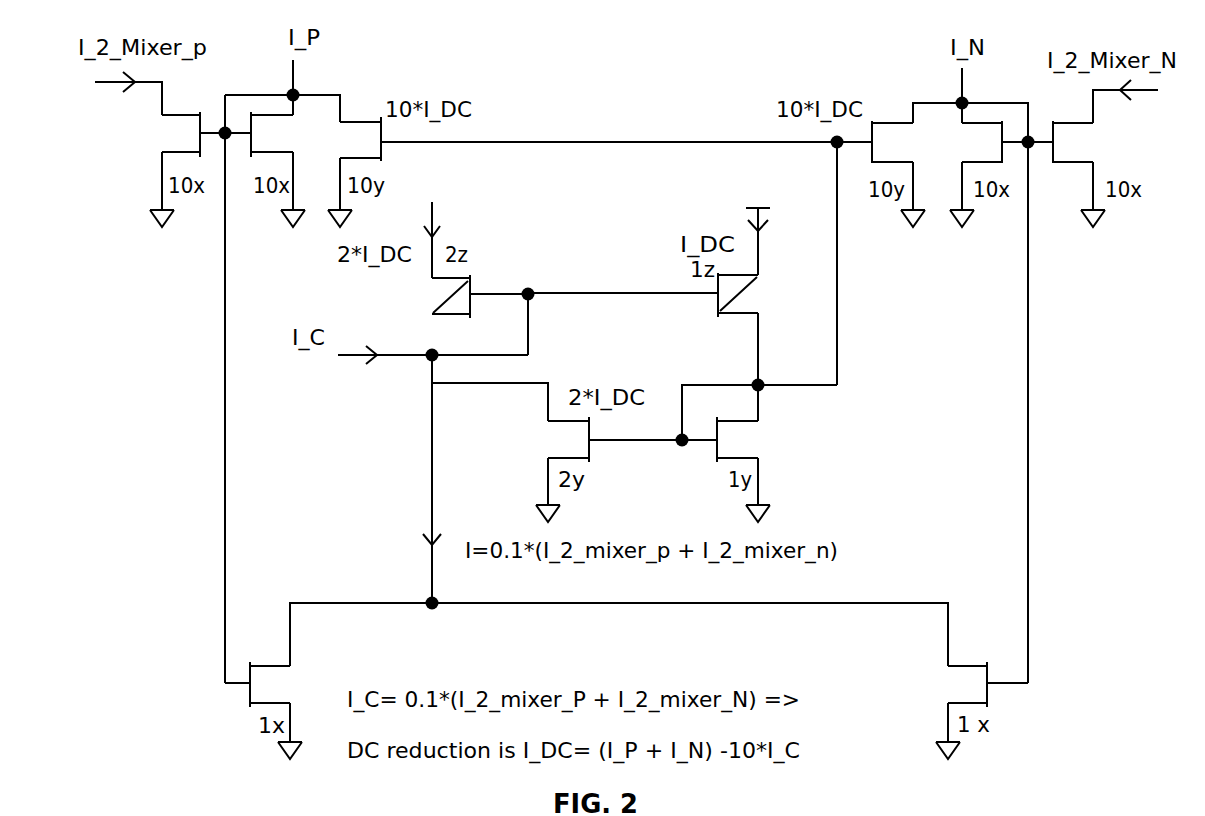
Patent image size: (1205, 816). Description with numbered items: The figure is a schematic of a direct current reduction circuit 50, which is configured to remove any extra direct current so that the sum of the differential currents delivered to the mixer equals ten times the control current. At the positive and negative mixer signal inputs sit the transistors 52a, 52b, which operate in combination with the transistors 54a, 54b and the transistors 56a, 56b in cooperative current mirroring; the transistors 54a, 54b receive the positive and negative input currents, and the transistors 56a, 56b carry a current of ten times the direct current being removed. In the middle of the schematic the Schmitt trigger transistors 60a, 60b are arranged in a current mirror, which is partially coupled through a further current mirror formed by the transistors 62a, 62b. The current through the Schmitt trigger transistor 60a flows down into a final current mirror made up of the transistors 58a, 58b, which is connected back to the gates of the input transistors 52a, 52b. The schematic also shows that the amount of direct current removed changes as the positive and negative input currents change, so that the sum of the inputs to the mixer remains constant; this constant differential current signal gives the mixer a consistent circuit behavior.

The direct current reduction circuit 50 is at (143, 728).
The transistor 52a is at (162, 137).
The transistor 52b is at (1080, 148).
The transistor 54a is at (285, 133).
The transistor 54b is at (977, 140).
The transistor 56a is at (362, 147).
The transistor 56b is at (892, 138).
The transistor 58a is at (287, 682).
The transistor 58b is at (952, 687).
The Schmitt trigger transistor 60a is at (460, 272).
The Schmitt trigger transistor 60b is at (748, 298).
The transistor 62a is at (553, 440).
The transistor 62b is at (753, 443).